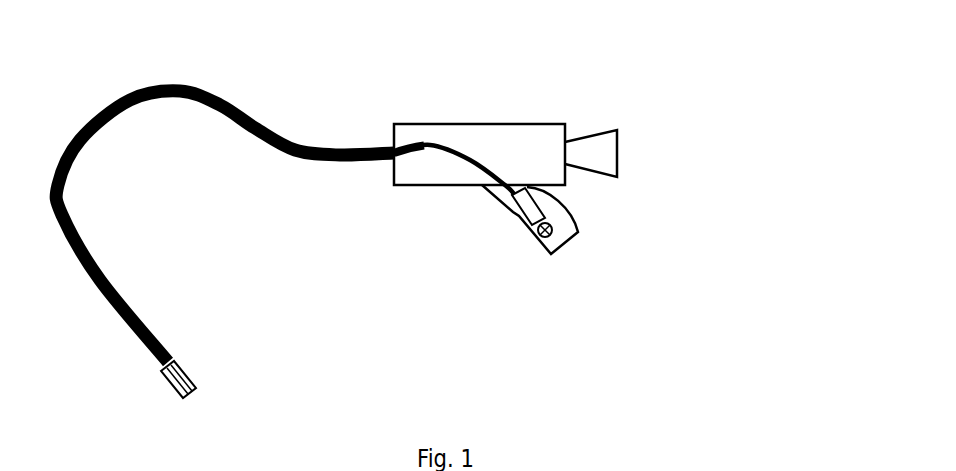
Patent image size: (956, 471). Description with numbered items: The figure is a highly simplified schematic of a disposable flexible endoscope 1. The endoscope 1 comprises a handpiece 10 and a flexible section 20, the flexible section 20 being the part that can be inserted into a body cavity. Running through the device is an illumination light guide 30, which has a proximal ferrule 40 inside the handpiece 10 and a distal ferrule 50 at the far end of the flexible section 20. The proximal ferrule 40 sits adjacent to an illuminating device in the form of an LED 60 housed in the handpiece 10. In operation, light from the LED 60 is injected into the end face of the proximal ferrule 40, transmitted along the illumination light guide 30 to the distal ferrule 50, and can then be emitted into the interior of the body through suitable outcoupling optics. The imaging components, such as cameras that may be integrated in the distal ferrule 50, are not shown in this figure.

The endoscope 1 is at (641, 92).
The handpiece 10 is at (492, 123).
The flexible section 20 is at (340, 162).
The illumination light guide 30 is at (428, 152).
The proximal ferrule 40 is at (530, 213).
The distal ferrule 50 is at (195, 384).
The LED 60 is at (545, 238).